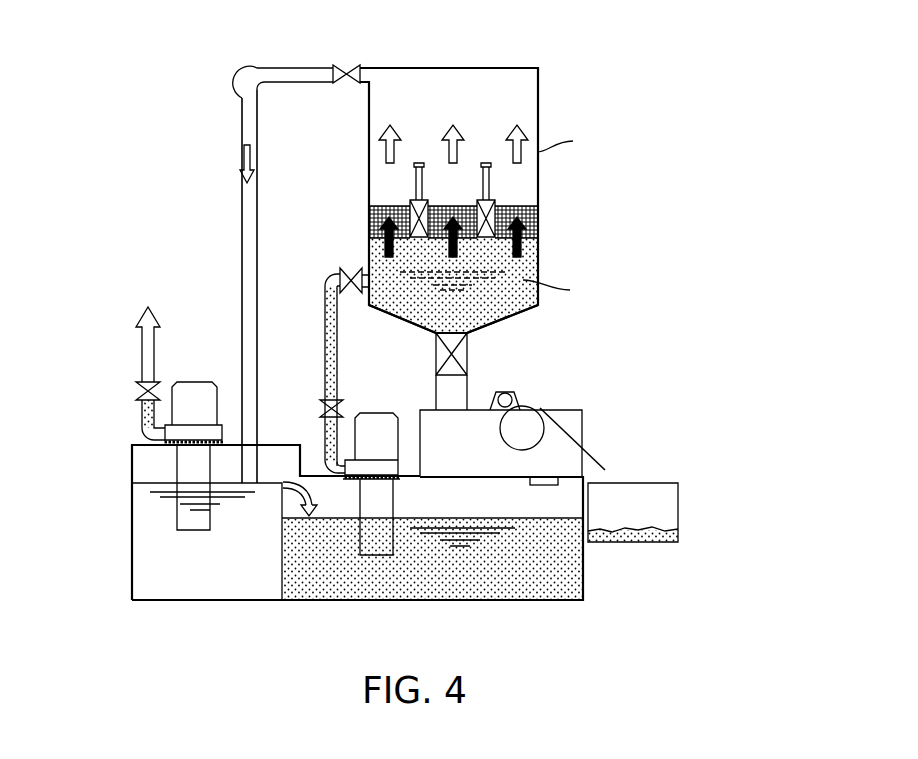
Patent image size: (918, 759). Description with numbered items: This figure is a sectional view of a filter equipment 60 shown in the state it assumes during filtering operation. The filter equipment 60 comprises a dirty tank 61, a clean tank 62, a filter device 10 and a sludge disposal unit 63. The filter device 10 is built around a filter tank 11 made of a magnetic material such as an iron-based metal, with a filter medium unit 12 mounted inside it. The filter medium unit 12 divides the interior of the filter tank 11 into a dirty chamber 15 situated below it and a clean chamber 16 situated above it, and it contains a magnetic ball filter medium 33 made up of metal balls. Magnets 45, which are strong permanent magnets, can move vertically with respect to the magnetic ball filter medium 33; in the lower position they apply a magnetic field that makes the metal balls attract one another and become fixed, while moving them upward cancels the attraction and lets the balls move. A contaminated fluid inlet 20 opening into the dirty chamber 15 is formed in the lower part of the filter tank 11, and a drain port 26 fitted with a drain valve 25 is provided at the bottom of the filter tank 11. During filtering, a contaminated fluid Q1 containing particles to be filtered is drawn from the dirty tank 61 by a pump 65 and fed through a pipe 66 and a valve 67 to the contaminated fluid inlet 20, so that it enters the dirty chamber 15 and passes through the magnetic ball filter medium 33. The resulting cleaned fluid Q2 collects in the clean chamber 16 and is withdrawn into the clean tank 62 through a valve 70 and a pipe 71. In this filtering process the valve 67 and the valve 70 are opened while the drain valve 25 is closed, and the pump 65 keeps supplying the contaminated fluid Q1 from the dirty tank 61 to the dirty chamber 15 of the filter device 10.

The filter device 10 is at (557, 211).
The filter tank 11 is at (538, 112).
The filter medium unit 12 is at (527, 248).
The dirty chamber 15 is at (497, 312).
The clean chamber 16 is at (515, 182).
The contaminated fluid inlet 20 is at (370, 284).
The drain valve 25 is at (462, 355).
The drain port 26 is at (470, 390).
The magnetic ball filter medium 33 is at (537, 218).
The magnet 45 is at (410, 205).
The filter equipment 60 is at (224, 65).
The dirty tank 61 is at (437, 600).
The clean tank 62 is at (176, 600).
The sludge disposal unit 63 is at (545, 410).
The pump 65 is at (378, 413).
The pipe 66 is at (325, 350).
The valve 67 is at (346, 270).
The valve 70 is at (347, 65).
The pipe 71 is at (240, 260).
The contaminated fluid Q1 is at (555, 577).
The cleaned fluid Q2 is at (130, 528).